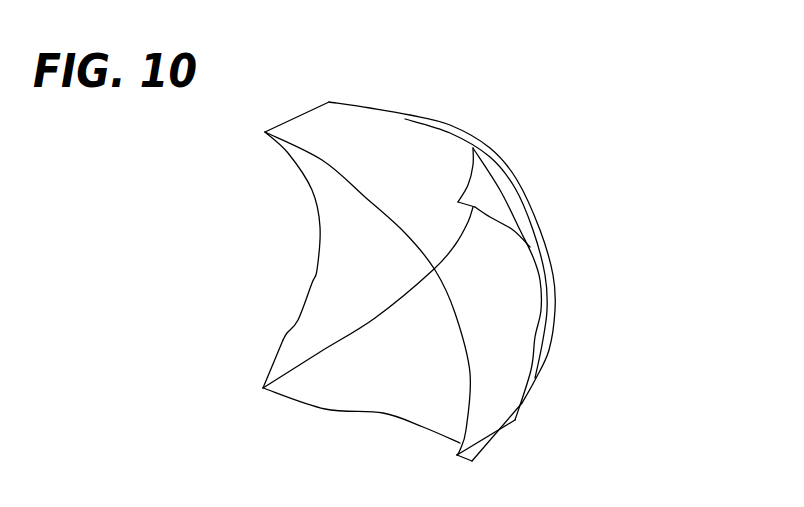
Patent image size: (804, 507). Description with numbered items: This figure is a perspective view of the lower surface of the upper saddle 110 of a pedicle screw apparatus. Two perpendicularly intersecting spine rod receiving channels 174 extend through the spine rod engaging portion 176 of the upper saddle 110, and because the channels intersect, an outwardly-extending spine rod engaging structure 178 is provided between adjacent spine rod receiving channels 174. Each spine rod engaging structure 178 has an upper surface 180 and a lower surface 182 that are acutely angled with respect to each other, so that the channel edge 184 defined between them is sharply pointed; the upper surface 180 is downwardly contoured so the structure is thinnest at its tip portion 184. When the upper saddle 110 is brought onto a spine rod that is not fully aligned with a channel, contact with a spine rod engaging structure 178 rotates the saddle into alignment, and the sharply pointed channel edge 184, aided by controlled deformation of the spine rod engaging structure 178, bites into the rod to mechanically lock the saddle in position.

The upper saddle 110 is at (545, 134).
The spine rod receiving channels 174 is at (408, 137).
The spine rod engaging portion 176 is at (530, 230).
The spine rod engaging structure 178 is at (310, 385).
The upper surface 180 is at (512, 210).
The lower surface 182 is at (455, 160).
The channel edge 184 is at (313, 190).